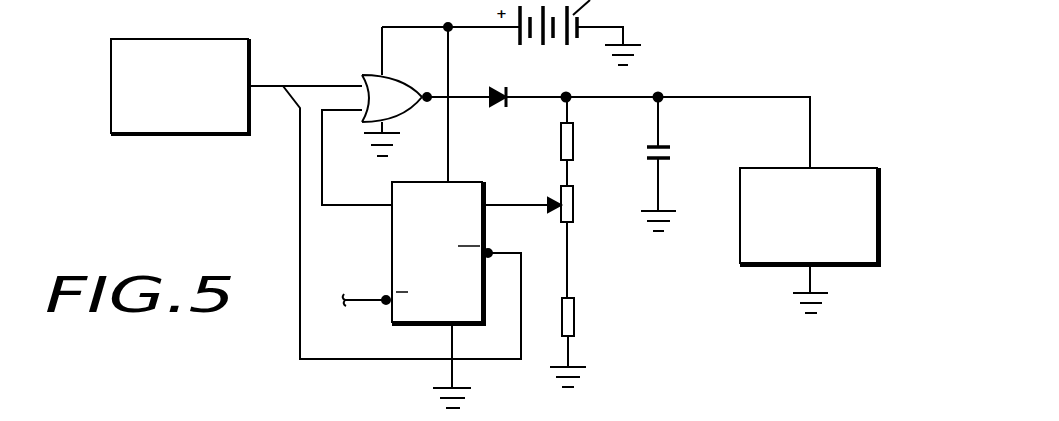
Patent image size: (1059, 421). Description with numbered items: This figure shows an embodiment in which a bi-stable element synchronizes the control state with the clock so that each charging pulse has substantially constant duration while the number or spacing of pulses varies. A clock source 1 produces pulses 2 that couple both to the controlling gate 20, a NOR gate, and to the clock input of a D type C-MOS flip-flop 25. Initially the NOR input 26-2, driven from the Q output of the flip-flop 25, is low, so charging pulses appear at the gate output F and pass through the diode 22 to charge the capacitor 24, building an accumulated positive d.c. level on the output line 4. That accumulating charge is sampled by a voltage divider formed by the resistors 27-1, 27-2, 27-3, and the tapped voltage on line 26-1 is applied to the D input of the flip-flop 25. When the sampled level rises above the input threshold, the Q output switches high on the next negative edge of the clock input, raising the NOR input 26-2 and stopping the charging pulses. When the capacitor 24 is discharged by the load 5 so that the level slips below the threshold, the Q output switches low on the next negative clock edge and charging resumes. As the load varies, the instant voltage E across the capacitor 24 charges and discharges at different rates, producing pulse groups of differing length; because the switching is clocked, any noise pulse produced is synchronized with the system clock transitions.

The clock source 1 is at (205, 46).
The pulses 2 is at (269, 85).
The output line 4 is at (770, 97).
The load 5 is at (843, 254).
The controlling gate 20 is at (393, 82).
The diode 22 is at (507, 90).
The capacitor 24 is at (672, 152).
The D type C-MOS flip-flop 25 is at (465, 191).
The line 26-1 is at (518, 202).
The NOR input 26-2 is at (357, 204).
The resistor 27-1 is at (576, 214).
The resistor 27-2 is at (574, 146).
The resistor 27-3 is at (575, 318).
The gate output F is at (467, 95).
The instant voltage E is at (810, 110).